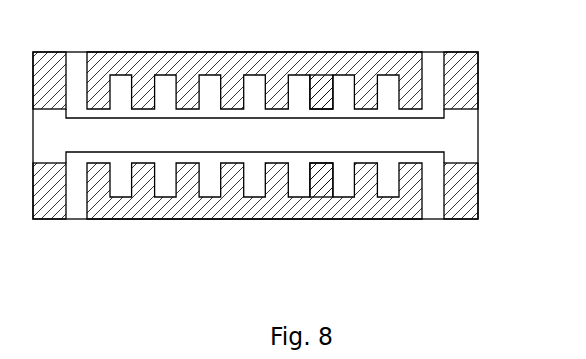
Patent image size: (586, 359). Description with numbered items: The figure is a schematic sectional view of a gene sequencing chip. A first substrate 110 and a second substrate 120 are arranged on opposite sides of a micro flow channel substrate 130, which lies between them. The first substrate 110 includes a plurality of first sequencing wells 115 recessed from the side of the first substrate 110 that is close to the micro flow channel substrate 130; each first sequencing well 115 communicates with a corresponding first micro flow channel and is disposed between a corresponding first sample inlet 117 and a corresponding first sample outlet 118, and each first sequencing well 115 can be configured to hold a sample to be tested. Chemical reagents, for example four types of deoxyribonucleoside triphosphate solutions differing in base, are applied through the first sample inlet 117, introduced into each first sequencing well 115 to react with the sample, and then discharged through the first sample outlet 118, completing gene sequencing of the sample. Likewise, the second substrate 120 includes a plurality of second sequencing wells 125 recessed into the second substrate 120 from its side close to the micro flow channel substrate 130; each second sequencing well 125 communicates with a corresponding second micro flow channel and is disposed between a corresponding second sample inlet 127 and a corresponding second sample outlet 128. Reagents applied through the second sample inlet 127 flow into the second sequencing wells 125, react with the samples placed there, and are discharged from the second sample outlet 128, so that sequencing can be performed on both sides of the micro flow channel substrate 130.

The first substrate 110 is at (254, 218).
The first sequencing well 115 is at (369, 218).
The first sample inlet 117 is at (103, 218).
The first sample outlet 118 is at (481, 218).
The second substrate 120 is at (254, 60).
The second sequencing well 125 is at (370, 60).
The second sample inlet 127 is at (100, 60).
The second sample outlet 128 is at (478, 60).
The micro flow channel substrate 130 is at (303, 139).